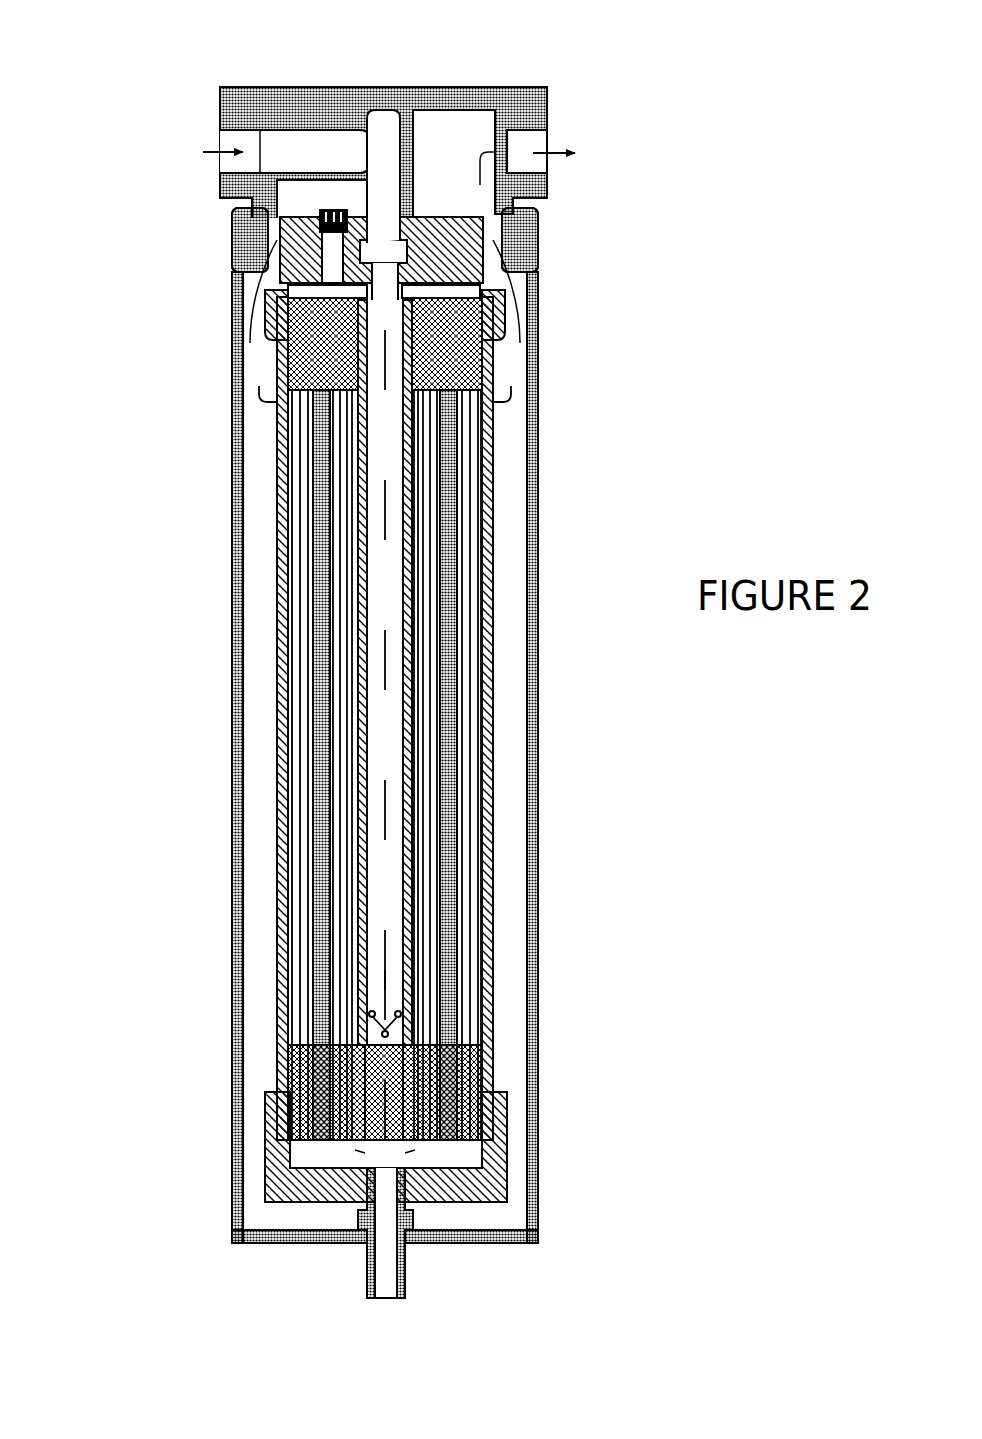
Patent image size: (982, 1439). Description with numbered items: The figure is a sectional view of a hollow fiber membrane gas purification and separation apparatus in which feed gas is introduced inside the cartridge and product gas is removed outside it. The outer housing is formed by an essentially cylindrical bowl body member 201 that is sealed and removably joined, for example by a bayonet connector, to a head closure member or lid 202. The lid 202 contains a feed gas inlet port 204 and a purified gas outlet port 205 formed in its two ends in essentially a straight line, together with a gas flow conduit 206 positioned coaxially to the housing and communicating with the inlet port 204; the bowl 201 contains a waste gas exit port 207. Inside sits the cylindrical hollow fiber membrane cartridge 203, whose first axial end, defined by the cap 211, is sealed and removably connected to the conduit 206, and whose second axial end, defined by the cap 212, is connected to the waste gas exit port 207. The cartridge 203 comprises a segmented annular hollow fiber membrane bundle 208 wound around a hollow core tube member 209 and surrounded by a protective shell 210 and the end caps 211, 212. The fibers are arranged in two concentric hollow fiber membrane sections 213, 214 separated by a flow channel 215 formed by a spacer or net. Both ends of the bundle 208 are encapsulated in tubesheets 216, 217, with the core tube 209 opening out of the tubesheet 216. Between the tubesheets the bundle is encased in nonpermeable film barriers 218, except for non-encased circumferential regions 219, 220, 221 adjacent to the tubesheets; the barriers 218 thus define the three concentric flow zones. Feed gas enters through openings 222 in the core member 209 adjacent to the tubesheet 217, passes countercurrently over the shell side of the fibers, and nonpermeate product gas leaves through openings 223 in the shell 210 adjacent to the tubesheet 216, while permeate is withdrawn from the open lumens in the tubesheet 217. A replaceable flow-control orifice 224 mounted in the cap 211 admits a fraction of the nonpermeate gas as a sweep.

The bowl body member 201 is at (538, 832).
The head closure member 202 is at (416, 87).
The hollow fiber membrane cartridge 203 is at (507, 537).
The feed gas inlet port 204 is at (233, 140).
The purified gas outlet port 205 is at (528, 142).
The gas flow conduit 206 is at (380, 205).
The waste gas exit port 207 is at (395, 1285).
The hollow fiber membrane bundle 208 is at (462, 485).
The hollow core tube member 209 is at (395, 445).
The shell 210 is at (495, 693).
The cap 211 is at (460, 243).
The cap 212 is at (510, 1172).
The hollow fiber membrane section 213 is at (340, 585).
The hollow fiber membrane section 214 is at (302, 728).
The flow channel 215 is at (315, 625).
The tubesheet 216 is at (493, 325).
The tubesheet 217 is at (465, 1082).
The film barriers 218 is at (293, 833).
The non-encased circumferential region 219 is at (300, 395).
The non-encased circumferential region 220 is at (313, 1038).
The non-encased circumferential region 221 is at (287, 442).
The openings 222 is at (410, 1010).
The openings 223 is at (497, 395).
The flow-control orifice 224 is at (250, 250).